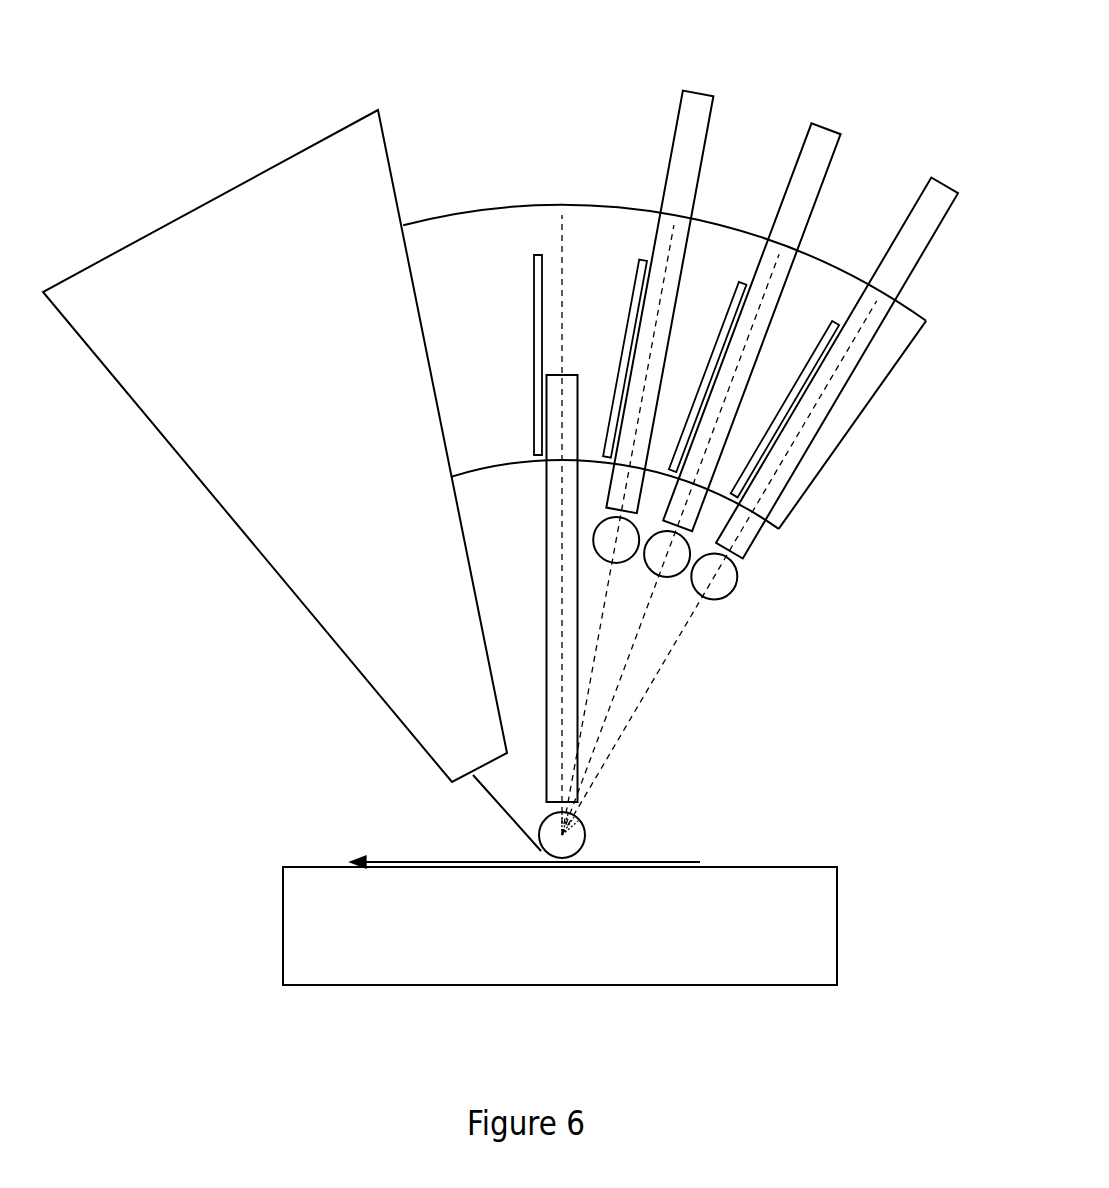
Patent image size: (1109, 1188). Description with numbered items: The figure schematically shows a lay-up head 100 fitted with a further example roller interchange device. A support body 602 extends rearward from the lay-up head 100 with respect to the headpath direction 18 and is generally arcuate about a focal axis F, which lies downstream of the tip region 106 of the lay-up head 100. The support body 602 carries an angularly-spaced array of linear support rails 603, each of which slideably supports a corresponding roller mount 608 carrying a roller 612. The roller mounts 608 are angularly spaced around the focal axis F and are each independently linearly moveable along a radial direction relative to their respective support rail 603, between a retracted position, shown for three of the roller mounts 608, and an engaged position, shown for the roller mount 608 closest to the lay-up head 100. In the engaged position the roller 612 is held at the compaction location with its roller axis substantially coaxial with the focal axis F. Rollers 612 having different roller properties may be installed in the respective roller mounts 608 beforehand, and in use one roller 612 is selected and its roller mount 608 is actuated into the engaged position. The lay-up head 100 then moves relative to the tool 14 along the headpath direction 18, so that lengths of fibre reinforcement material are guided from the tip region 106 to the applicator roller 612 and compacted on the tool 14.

The lay-up head 100 is at (170, 262).
The support body 602 is at (868, 383).
The roller mount 608 is at (697, 90).
The linear support rail 603 is at (535, 265).
The roller 612 is at (740, 586).
The focal axis F is at (563, 836).
The tip region 106 is at (460, 788).
The headpath direction 18 is at (427, 857).
The tool 14 is at (375, 958).